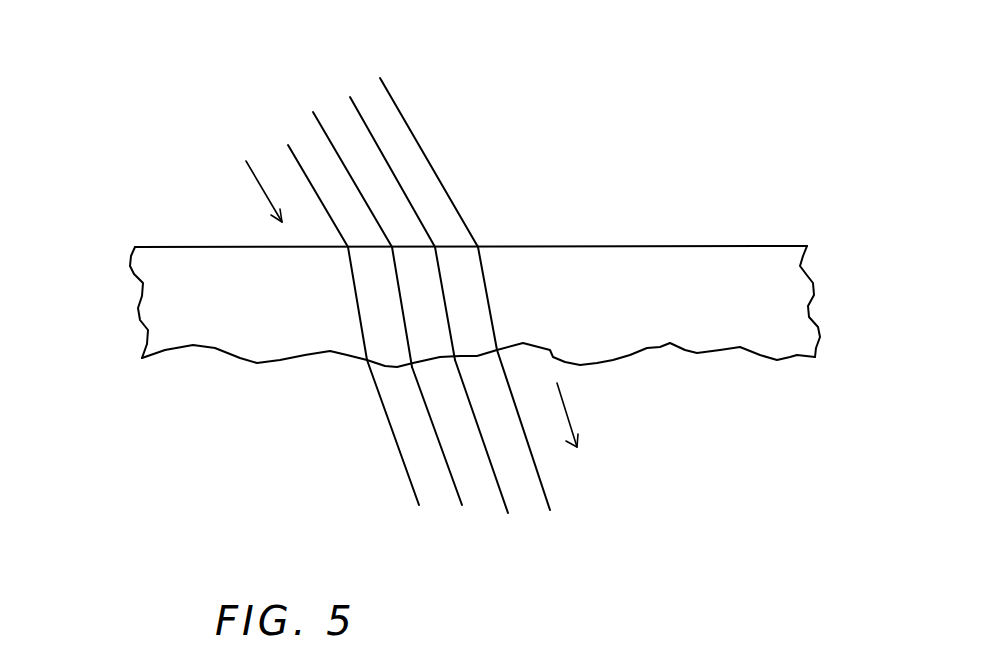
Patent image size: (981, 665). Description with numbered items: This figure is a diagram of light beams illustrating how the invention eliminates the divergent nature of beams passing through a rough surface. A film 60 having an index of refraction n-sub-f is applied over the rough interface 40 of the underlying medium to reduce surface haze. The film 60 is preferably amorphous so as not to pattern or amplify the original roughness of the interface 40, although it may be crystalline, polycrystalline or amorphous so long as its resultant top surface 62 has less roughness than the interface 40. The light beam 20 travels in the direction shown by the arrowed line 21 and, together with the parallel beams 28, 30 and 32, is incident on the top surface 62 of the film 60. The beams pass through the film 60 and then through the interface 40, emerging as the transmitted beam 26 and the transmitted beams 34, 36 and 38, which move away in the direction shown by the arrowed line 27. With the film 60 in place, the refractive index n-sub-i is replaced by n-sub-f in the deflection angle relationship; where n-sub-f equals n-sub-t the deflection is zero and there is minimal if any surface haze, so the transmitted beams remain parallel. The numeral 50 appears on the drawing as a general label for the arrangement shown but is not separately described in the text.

The light beam 20 is at (299, 157).
The arrowed line 21 is at (252, 173).
The transmitted beam 26 is at (387, 420).
The arrowed line 27 is at (563, 397).
The beam 28 is at (333, 143).
The beam 30 is at (358, 110).
The beam 32 is at (408, 120).
The transmitted beam 34 is at (453, 485).
The transmitted beam 36 is at (502, 503).
The transmitted beam 38 is at (547, 488).
The interface 40 is at (797, 357).
The optical system 50 is at (711, 21).
The film 60 is at (125, 273).
The top surface 62 is at (208, 247).